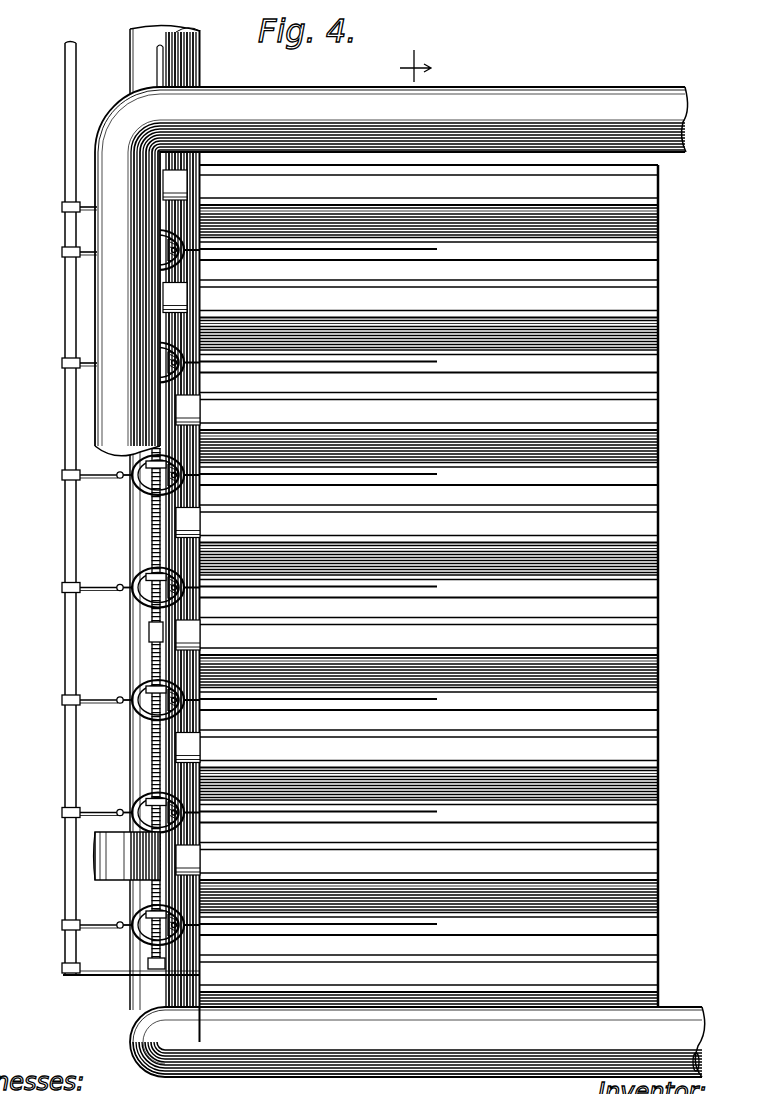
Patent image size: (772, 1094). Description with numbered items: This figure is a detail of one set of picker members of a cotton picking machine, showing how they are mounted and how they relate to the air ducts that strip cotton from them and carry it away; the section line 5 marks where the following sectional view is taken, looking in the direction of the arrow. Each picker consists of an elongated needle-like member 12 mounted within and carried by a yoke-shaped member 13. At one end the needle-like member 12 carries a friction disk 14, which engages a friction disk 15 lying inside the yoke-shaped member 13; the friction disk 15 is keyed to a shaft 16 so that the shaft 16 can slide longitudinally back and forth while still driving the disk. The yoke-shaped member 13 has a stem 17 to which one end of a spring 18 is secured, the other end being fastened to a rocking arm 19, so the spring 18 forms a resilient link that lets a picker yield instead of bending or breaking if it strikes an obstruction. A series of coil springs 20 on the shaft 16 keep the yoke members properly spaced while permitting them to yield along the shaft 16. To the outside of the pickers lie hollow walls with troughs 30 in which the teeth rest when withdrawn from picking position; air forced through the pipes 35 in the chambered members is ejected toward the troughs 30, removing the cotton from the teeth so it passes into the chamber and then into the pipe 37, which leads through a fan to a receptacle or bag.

The section line 5 is at (415, 57).
The needle-like member 12 is at (426, 257).
The yoke-shaped member 13 is at (137, 696).
The friction disk 14 is at (158, 708).
The friction disk 15 is at (145, 690).
The shaft 16 is at (150, 540).
The stem 17 is at (120, 584).
The spring 18 is at (120, 592).
The rocking arm 19 is at (94, 597).
The coil springs 20 is at (149, 632).
The troughs 30 is at (514, 273).
The pipes 35 is at (552, 285).
The pipe 37 is at (113, 505).